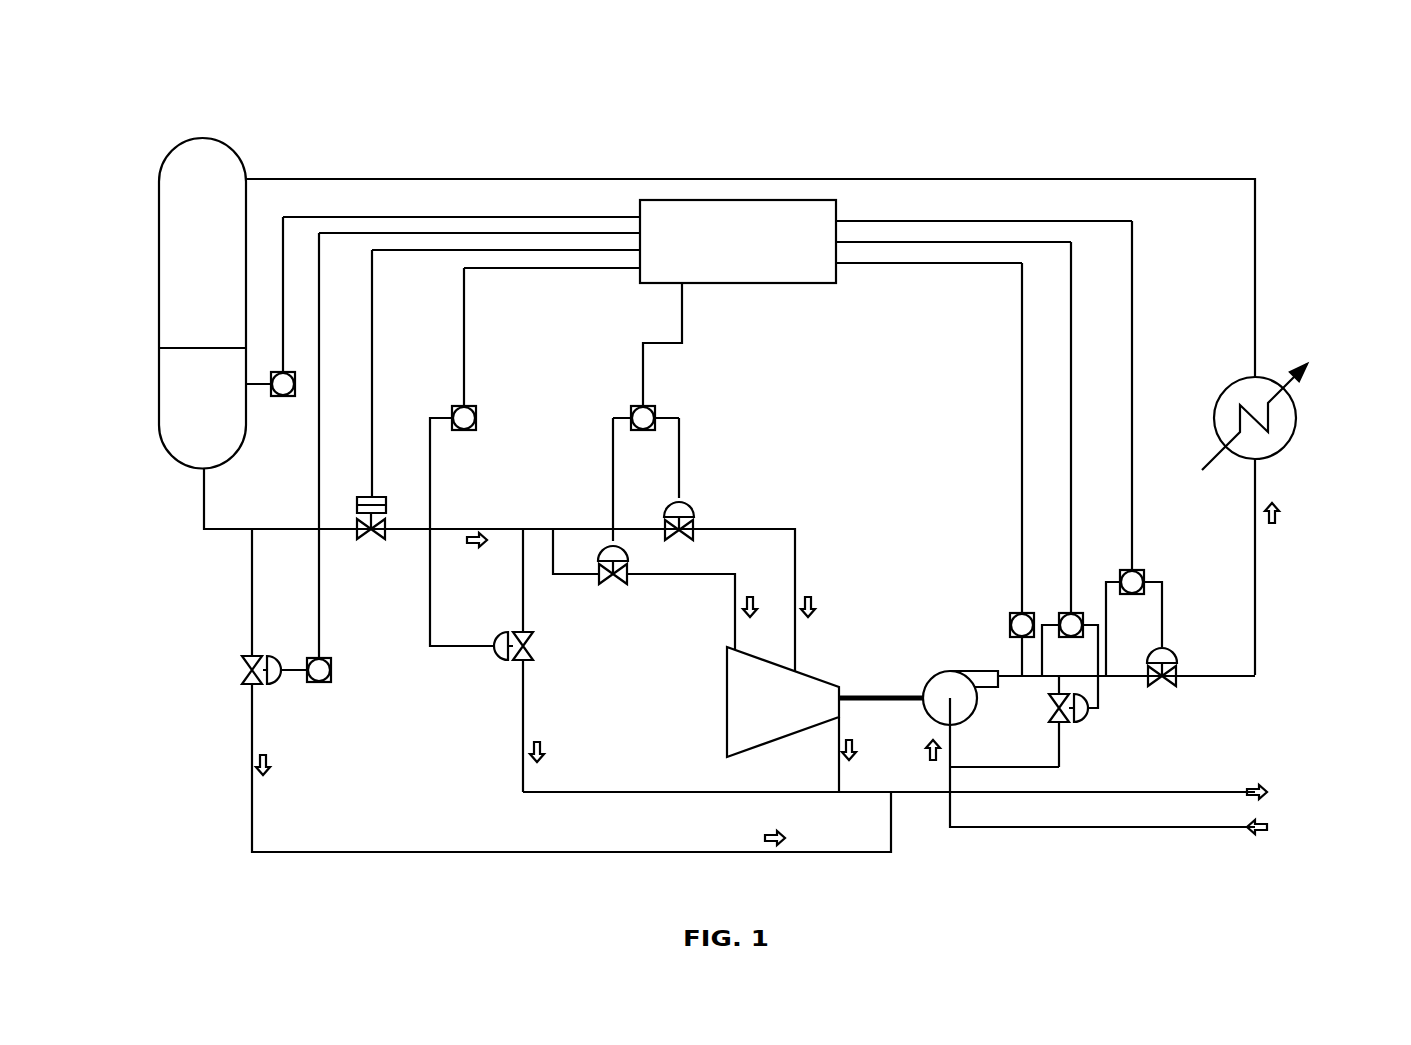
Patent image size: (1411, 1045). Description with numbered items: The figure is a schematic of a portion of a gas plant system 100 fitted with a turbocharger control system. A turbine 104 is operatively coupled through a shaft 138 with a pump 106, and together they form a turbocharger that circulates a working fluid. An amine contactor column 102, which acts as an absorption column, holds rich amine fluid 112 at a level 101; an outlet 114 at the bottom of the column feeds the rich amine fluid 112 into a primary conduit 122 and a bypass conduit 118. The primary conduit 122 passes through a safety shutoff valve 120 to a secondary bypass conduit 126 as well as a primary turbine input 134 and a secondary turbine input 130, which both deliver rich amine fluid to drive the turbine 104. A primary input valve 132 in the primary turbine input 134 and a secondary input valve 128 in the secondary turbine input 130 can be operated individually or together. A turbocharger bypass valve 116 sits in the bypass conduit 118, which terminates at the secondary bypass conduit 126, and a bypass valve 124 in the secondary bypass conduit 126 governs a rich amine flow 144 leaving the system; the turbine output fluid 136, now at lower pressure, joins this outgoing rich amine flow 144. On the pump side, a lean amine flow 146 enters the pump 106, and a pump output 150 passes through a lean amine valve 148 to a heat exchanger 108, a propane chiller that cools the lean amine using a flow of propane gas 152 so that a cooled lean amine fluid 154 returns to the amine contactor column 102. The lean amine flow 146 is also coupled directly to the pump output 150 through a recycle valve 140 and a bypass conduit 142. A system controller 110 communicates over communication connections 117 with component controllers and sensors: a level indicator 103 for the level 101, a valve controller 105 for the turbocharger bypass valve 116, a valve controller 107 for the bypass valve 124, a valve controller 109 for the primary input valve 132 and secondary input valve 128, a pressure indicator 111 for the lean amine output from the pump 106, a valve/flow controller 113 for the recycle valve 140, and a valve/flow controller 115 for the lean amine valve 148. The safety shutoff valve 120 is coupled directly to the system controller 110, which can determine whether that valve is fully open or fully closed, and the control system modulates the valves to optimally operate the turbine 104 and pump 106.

The gas plant system 100 is at (213, 70).
The level 101 is at (170, 347).
The amine contactor column 102 is at (219, 262).
The level indicator 103 is at (287, 397).
The turbine 104 is at (825, 670).
The valve controller 105 is at (319, 683).
The pump 106 is at (955, 666).
The valve controller 107 is at (477, 417).
The heat exchanger 108 is at (1297, 417).
The valve controller 109 is at (657, 412).
The system controller 110 is at (755, 254).
The pressure indicator 111 is at (1015, 612).
The rich amine fluid 112 is at (170, 403).
The valve/flow controller 113 is at (1065, 612).
The outlet 114 is at (200, 500).
The valve/flow controller 115 is at (1143, 569).
The turbocharger bypass valve 116 is at (242, 680).
The communication connections 117 is at (575, 217).
The bypass conduit 118 is at (252, 750).
The safety shutoff valve 120 is at (360, 540).
The primary conduit 122 is at (273, 532).
The bypass valve 124 is at (528, 662).
The secondary bypass conduit 126 is at (645, 790).
The secondary input valve 128 is at (600, 585).
The secondary turbine input 130 is at (733, 587).
The primary input valve 132 is at (692, 522).
The primary turbine input 134 is at (795, 572).
The turbine output fluid 136 is at (838, 753).
The shaft 138 is at (910, 693).
The recycle valve 140 is at (1065, 723).
The bypass conduit 142 is at (983, 768).
The rich amine flow 144 is at (1167, 790).
The lean amine flow 146 is at (1168, 828).
The lean amine valve 148 is at (1177, 684).
The pump output 150 is at (1143, 677).
The propane gas 152 is at (1295, 367).
The cooled lean amine fluid 154 is at (1180, 179).